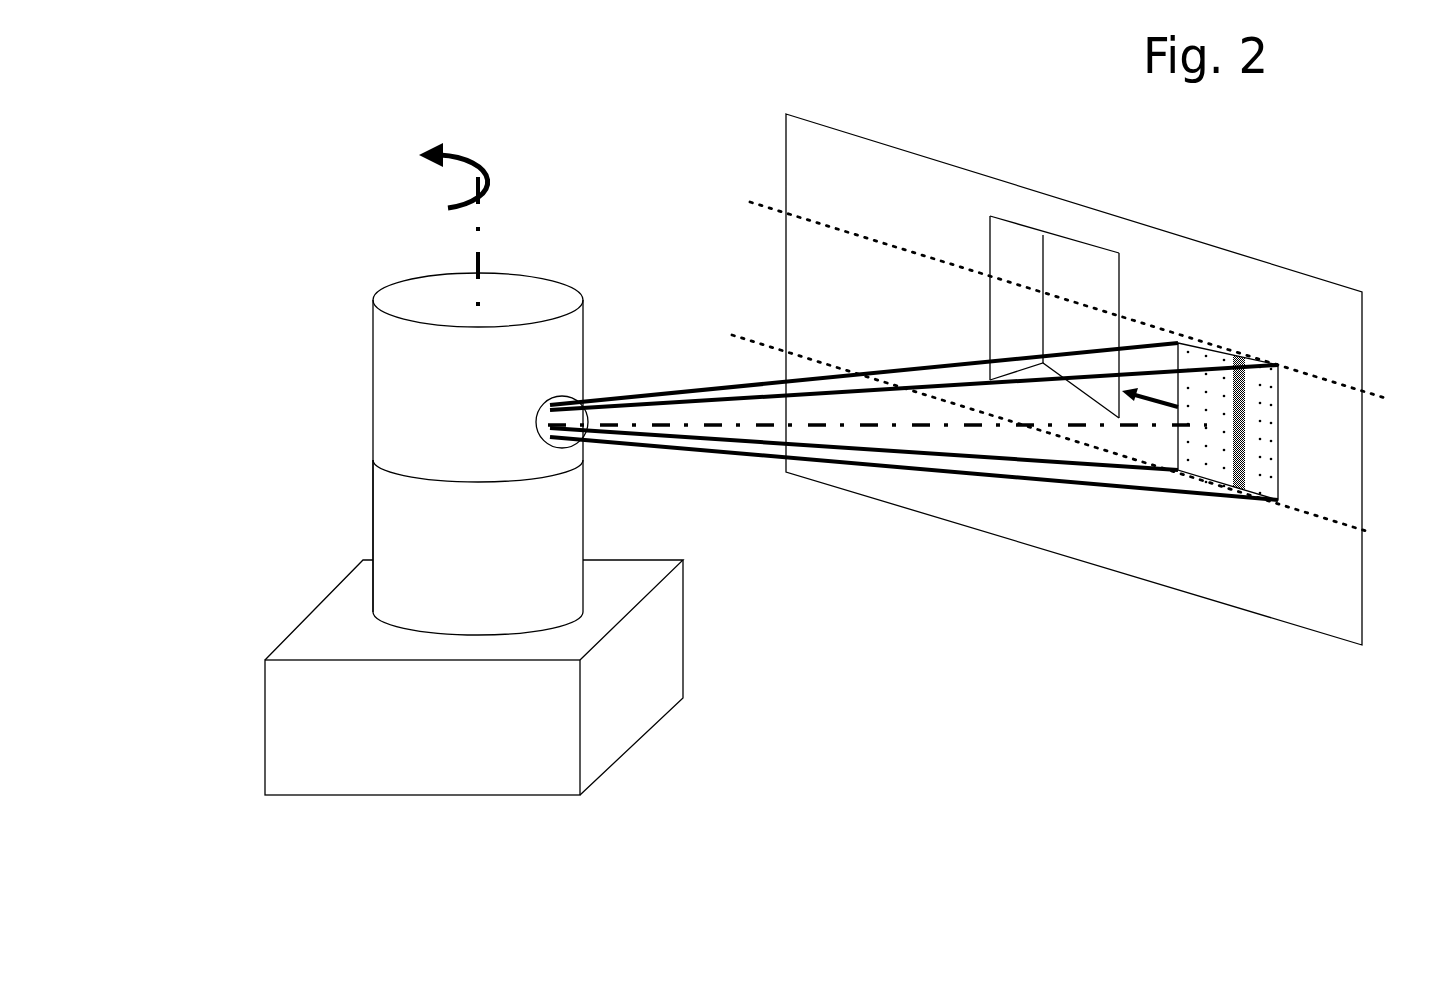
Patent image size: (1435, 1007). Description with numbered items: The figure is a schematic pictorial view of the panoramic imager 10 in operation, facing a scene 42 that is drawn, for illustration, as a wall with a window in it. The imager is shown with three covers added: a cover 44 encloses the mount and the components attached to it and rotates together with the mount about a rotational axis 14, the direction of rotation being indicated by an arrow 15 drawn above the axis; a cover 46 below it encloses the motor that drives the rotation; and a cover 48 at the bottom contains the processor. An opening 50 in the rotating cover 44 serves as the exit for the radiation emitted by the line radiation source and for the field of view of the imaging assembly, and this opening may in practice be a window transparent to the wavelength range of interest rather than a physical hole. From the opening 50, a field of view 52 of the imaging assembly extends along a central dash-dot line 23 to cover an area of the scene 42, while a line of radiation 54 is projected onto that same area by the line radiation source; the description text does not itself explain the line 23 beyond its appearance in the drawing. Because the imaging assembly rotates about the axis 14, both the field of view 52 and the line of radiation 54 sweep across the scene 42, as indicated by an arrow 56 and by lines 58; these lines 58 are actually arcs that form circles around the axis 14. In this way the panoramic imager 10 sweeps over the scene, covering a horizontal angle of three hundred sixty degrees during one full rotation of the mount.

The panoramic imager 10 is at (232, 163).
The rotational axis 14 is at (478, 250).
The arrow 15 is at (470, 155).
The optical axis 23 is at (938, 423).
The scene 42 is at (855, 148).
The cover 44 is at (372, 377).
The cover 46 is at (367, 525).
The cover 48 is at (305, 703).
The opening 50 is at (583, 407).
The field of view 52 is at (1260, 400).
The line of radiation 54 is at (1245, 450).
The arrow 56 is at (1147, 393).
The lines 58 is at (1374, 397).